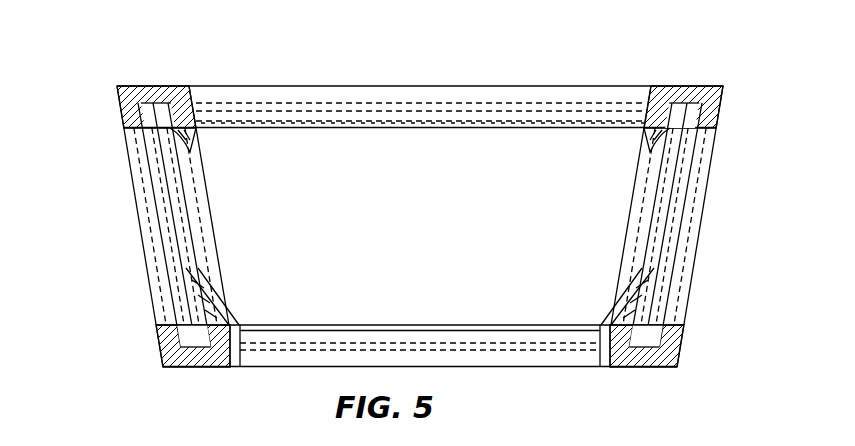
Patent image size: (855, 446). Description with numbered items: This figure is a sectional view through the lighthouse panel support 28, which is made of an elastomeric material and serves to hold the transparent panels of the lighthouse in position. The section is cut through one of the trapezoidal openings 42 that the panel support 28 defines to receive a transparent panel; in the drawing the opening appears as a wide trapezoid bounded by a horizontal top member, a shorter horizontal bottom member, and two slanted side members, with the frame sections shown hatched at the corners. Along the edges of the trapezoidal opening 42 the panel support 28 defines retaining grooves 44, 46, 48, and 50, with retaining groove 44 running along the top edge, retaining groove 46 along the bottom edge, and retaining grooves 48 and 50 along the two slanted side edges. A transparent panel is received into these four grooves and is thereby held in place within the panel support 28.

The lighthouse panel support 28 is at (676, 87).
The trapezoidal opening 42 is at (428, 210).
The retaining groove 44 is at (359, 110).
The retaining groove 46 is at (488, 343).
The retaining groove 48 is at (681, 183).
The retaining groove 50 is at (161, 199).